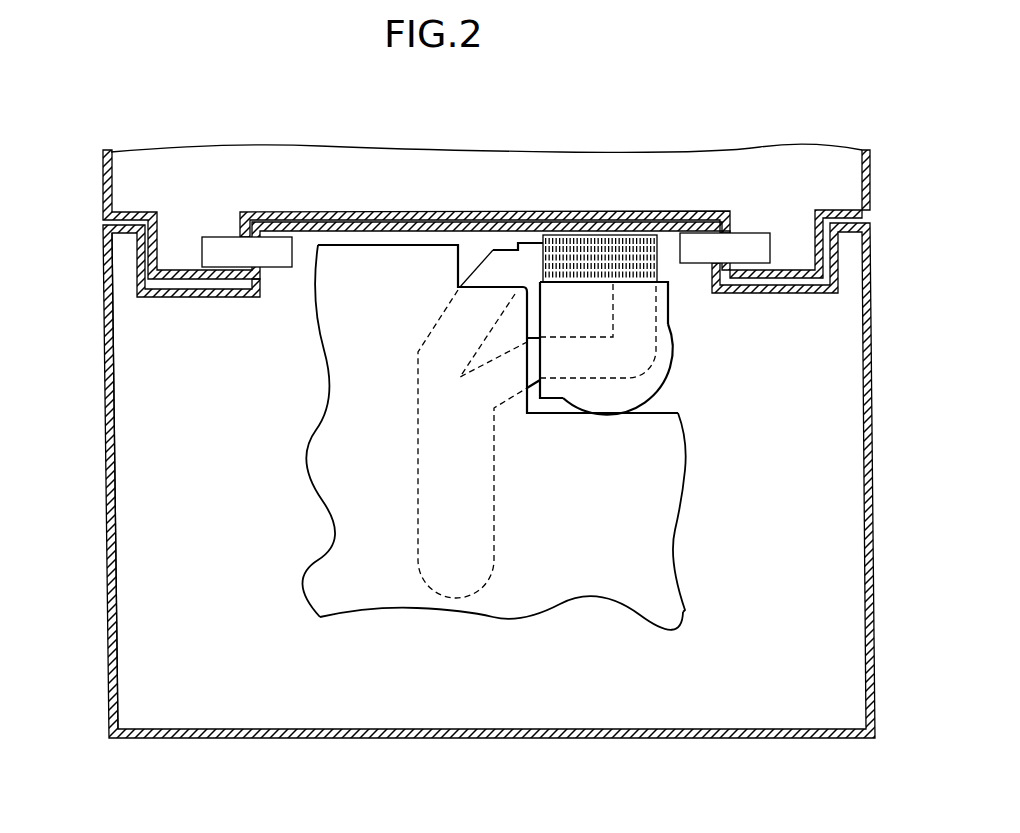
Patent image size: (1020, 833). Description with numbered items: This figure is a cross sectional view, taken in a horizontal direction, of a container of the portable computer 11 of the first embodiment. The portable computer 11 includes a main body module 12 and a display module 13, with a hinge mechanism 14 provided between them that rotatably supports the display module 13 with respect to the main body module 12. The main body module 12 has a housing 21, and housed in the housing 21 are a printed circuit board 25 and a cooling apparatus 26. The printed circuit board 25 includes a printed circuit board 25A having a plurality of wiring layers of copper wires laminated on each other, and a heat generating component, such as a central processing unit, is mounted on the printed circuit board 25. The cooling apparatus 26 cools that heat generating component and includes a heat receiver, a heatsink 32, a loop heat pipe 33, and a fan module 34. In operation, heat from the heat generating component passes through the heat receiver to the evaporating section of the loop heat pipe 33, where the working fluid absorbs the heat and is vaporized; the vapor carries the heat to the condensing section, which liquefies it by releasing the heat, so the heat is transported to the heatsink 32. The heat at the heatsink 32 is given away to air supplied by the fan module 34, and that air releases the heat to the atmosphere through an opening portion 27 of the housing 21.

The portable computer 11 is at (479, 170).
The main body module 12 is at (131, 540).
The display module 13 is at (129, 178).
The hinge mechanism 14 is at (216, 242).
The housing 21 is at (107, 420).
The printed circuit board 25 is at (682, 560).
The printed circuit board 25A is at (660, 510).
The cooling apparatus 26 is at (516, 185).
The opening portion 27 is at (629, 218).
The heatsink 32 is at (551, 246).
The loop heat pipe 33 is at (489, 262).
The fan module 34 is at (672, 352).